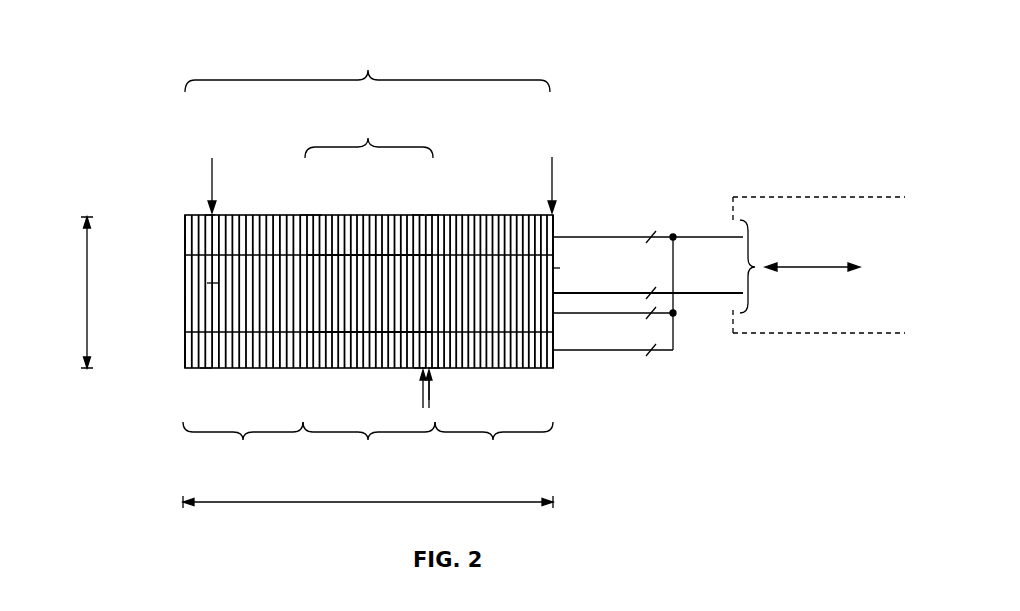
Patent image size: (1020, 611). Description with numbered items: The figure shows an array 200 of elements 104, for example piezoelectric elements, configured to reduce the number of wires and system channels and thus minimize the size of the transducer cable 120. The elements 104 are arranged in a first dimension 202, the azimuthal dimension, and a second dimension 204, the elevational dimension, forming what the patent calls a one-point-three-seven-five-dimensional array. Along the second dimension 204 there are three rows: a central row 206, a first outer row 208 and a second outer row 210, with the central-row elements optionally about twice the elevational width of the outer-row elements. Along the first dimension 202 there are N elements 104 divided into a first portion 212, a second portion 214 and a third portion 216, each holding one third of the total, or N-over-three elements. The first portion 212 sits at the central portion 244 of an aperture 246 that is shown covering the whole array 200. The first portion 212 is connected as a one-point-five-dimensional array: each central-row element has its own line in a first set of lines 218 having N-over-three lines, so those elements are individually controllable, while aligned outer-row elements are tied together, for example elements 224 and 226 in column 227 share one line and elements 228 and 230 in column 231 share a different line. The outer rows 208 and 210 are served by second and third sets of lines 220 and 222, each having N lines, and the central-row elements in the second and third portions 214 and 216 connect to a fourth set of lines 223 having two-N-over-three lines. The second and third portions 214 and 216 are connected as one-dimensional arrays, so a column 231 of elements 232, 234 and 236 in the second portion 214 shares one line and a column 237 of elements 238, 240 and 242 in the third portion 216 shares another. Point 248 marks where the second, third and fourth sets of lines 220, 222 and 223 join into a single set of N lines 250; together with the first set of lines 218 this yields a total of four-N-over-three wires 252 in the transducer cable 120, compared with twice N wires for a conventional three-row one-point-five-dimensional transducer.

The array 200 is at (491, 200).
The first dimension 202 is at (362, 505).
The second dimension 204 is at (85, 292).
The central row 206 is at (187, 302).
The first outer row 208 is at (187, 243).
The second outer row 210 is at (187, 352).
The first portion 212 is at (402, 438).
The second portion 214 is at (272, 438).
The third portion 216 is at (525, 438).
The first set of lines 218 is at (556, 292).
The second set of lines 220 is at (615, 237).
The third set of lines 222 is at (665, 352).
The fourth set of lines 223 is at (590, 313).
The element 224 is at (433, 216).
The element 226 is at (434, 370).
The column 227 is at (432, 402).
The element 228 is at (418, 216).
The element 230 is at (420, 370).
The column 231 is at (207, 178).
The element 232 is at (210, 215).
The element 234 is at (213, 283).
The element 236 is at (207, 369).
The column 237 is at (553, 178).
The element 238 is at (553, 216).
The element 240 is at (553, 268).
The element 242 is at (553, 370).
The central portion 244 is at (369, 133).
The aperture 246 is at (367, 67).
The point 248 is at (673, 237).
The set of N lines 250 is at (697, 235).
The wires 252 is at (813, 268).
The transducer cable 120 is at (835, 335).
The elements 104 is at (305, 216).